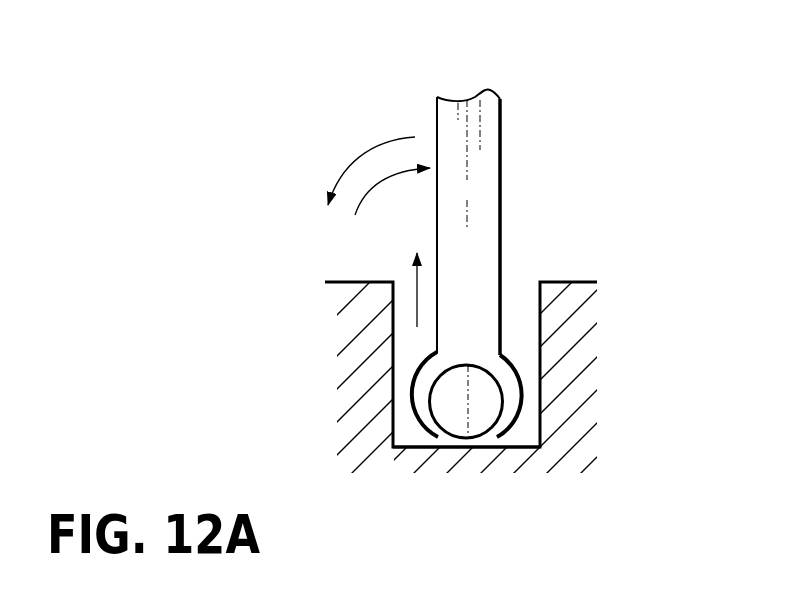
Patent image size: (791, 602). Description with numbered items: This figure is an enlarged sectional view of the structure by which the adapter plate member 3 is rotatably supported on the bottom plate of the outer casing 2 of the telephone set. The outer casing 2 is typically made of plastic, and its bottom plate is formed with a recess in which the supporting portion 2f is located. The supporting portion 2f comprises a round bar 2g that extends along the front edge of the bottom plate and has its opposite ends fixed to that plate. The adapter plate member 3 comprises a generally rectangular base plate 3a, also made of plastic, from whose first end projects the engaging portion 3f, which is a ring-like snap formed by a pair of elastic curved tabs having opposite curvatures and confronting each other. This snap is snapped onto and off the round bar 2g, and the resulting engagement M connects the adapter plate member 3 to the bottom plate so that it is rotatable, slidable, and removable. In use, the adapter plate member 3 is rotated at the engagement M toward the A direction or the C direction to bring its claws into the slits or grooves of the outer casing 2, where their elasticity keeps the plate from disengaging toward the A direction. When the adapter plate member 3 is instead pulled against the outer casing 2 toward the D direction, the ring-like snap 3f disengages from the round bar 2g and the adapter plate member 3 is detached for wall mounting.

The outer casing 2 is at (478, 468).
The supporting portion 2f is at (517, 328).
The round bar 2g is at (457, 380).
The adapter plate member 3 is at (535, 242).
The base plate 3a is at (478, 212).
The engaging portion 3f is at (518, 395).
The rotatable engagement M is at (535, 238).
The A direction A is at (371, 153).
The C direction C is at (392, 194).
The D direction D is at (422, 274).